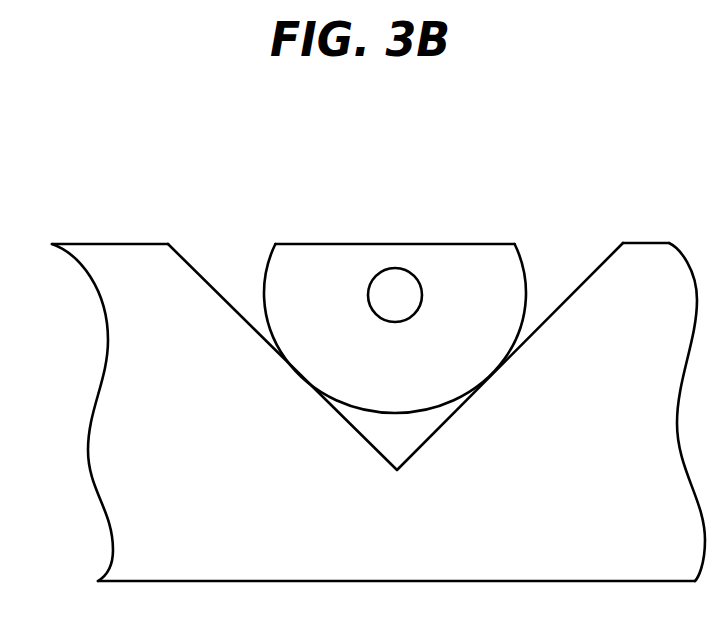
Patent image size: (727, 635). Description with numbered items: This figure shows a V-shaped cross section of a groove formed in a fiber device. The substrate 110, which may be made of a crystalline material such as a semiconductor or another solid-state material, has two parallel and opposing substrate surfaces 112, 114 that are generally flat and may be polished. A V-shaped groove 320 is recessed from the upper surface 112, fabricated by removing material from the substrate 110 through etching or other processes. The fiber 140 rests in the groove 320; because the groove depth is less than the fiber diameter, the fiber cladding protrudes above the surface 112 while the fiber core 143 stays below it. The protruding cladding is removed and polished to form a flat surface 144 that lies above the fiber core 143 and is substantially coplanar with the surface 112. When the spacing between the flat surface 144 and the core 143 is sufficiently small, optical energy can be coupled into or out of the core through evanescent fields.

The substrate 110 is at (297, 551).
The substrate surface 112 is at (110, 244).
The substrate surface 114 is at (590, 581).
The V-shaped groove 320 is at (217, 288).
The fiber 140 is at (485, 267).
The fiber core 143 is at (395, 309).
The flat surface 144 is at (422, 243).